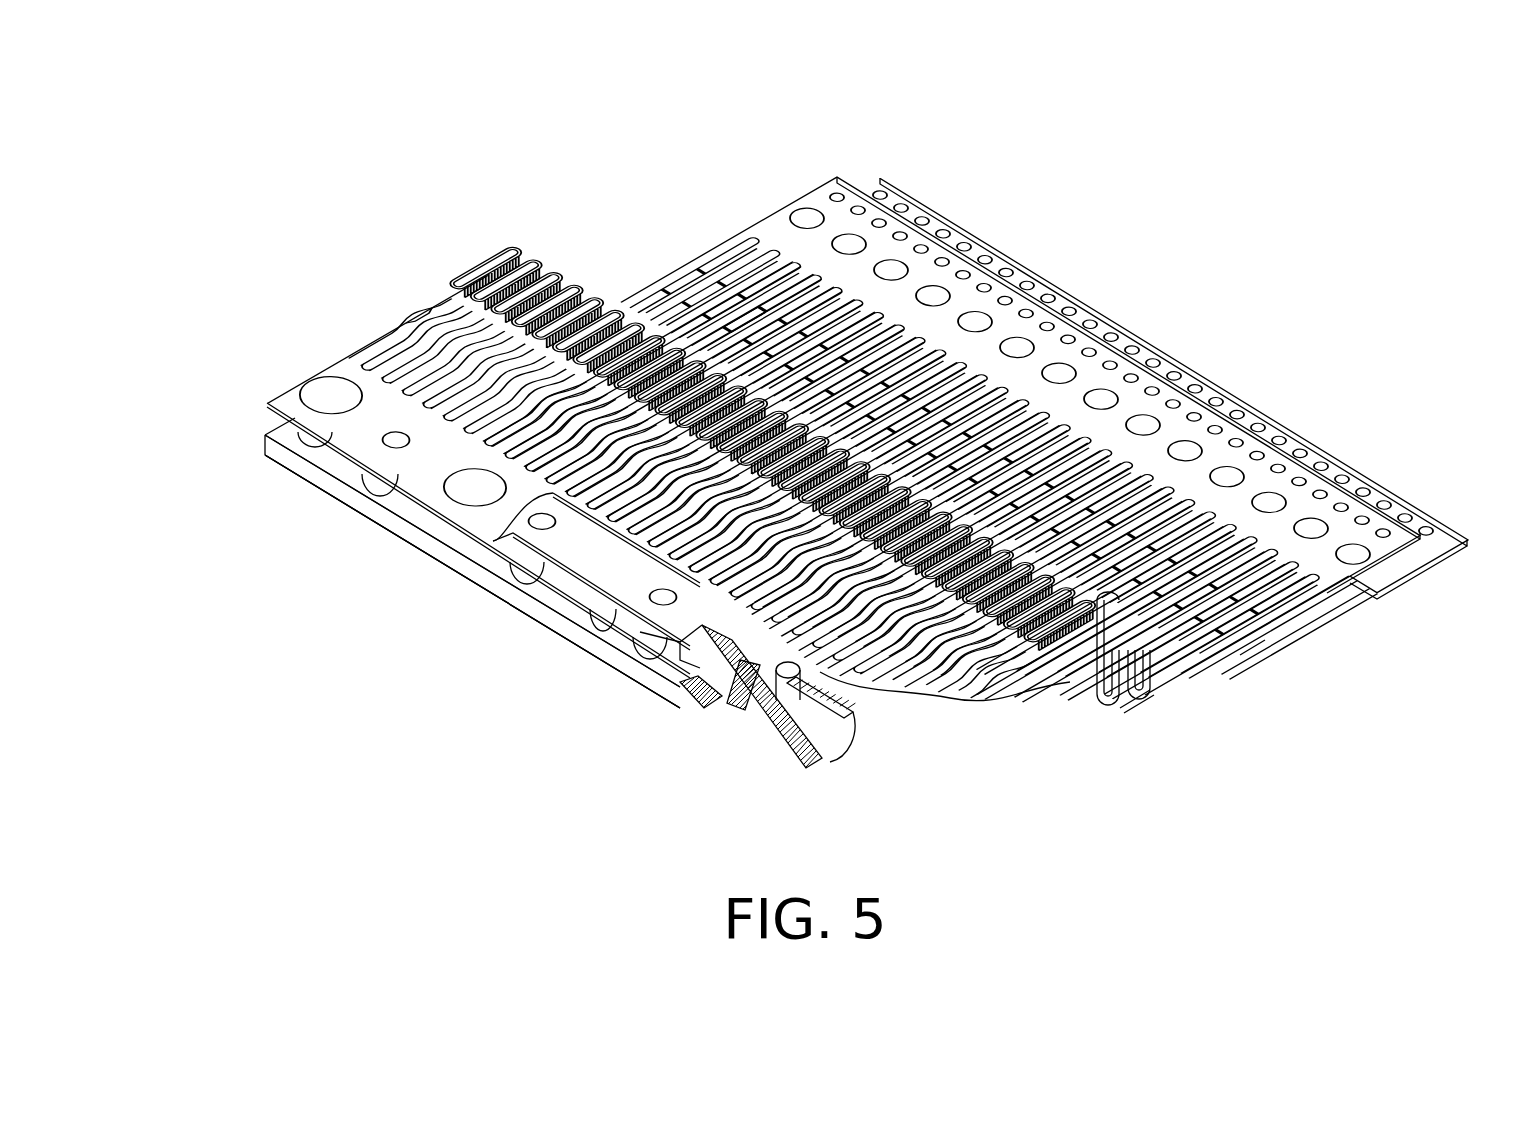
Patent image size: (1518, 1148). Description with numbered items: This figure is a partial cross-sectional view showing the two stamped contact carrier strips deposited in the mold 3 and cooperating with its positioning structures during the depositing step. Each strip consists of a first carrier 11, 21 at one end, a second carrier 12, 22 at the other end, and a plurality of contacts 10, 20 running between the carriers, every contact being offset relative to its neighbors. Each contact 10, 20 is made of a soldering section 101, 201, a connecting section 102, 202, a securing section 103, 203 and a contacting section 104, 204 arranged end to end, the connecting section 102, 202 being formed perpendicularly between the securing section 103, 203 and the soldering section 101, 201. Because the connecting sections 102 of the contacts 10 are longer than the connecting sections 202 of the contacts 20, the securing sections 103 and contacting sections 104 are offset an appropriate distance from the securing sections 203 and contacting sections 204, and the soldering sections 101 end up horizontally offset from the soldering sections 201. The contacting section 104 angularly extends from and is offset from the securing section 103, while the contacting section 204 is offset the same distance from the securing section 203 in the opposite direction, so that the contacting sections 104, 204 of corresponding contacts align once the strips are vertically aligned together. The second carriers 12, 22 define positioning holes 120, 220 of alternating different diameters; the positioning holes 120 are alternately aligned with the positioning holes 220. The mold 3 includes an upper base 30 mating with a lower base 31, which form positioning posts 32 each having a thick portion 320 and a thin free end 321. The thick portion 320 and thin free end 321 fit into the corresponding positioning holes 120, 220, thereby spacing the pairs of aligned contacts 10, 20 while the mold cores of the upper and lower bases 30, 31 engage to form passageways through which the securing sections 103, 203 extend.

The contact 10 is at (520, 232).
The soldering section 101 is at (683, 290).
The connecting section 102 is at (1130, 700).
The securing section 103 is at (485, 265).
The contacting section 104 is at (432, 312).
The first carrier 11 is at (785, 215).
The second carrier 12 is at (272, 400).
The positioning holes 120 is at (395, 440).
The contact 20 is at (1049, 717).
The soldering section 201 is at (1253, 648).
The connecting section 202 is at (1173, 690).
The securing section 203 is at (1105, 693).
The contacting section 204 is at (1003, 700).
The first carrier 21 is at (1405, 530).
The second carrier 22 is at (332, 458).
The positioning holes 220 is at (455, 527).
The mold 3 is at (357, 520).
The upper base 30 is at (580, 557).
The lower base 31 is at (602, 650).
The positioning posts 32 is at (778, 745).
The thick portion 320 is at (806, 762).
The thin free end 321 is at (725, 703).